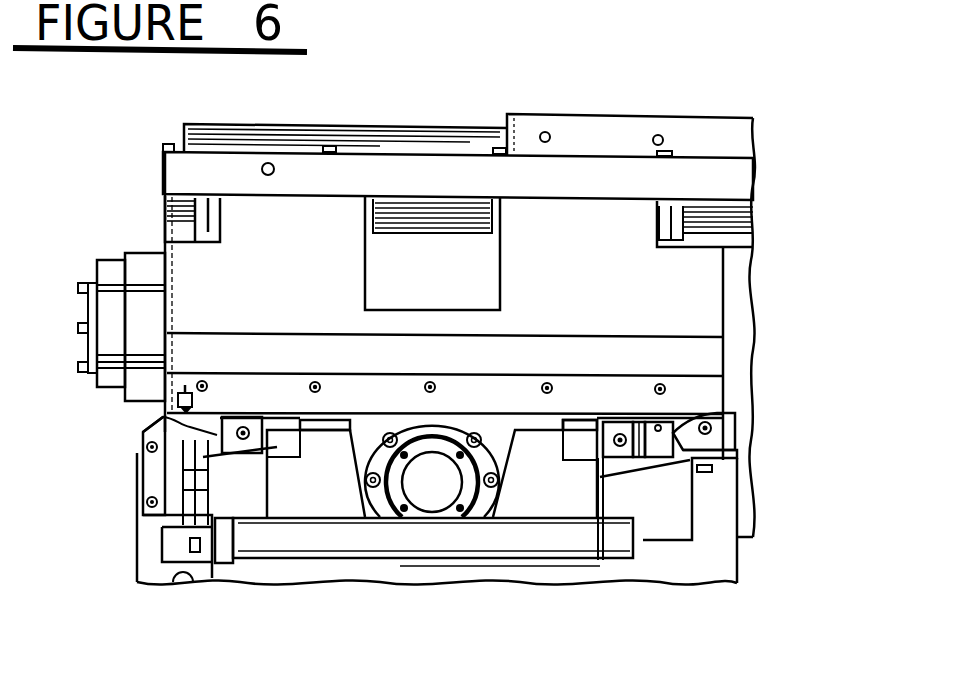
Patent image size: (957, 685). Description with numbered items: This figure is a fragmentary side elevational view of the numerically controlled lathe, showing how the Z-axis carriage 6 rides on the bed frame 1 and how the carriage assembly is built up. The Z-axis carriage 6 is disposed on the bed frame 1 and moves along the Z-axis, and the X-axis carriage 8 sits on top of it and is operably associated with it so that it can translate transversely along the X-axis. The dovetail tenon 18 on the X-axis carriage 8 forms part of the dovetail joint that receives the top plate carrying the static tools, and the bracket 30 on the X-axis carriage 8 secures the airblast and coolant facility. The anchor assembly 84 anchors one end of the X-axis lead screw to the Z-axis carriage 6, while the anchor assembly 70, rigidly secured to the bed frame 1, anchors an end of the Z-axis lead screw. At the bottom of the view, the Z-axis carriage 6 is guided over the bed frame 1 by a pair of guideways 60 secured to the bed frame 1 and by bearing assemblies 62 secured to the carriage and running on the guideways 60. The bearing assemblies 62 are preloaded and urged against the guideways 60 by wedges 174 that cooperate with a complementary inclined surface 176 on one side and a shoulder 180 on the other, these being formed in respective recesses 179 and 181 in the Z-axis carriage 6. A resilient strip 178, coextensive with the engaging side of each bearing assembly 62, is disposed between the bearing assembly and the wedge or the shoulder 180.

The bed frame 1 is at (736, 584).
The Z-axis carriage 6 is at (732, 317).
The X-axis carriage 8 is at (150, 160).
The dovetail tenon 18 is at (413, 109).
The bracket 30 is at (601, 115).
The guideways 60 is at (291, 448).
The bearing assemblies 62 is at (236, 465).
The anchor assembly 70 is at (415, 530).
The anchor assembly 84 is at (98, 240).
The wedges 174 is at (741, 453).
The inclined surface 176 is at (735, 412).
The resilient strip 178 is at (218, 430).
The recess 179 is at (660, 431).
The shoulder 180 is at (163, 417).
The recess 181 is at (286, 426).